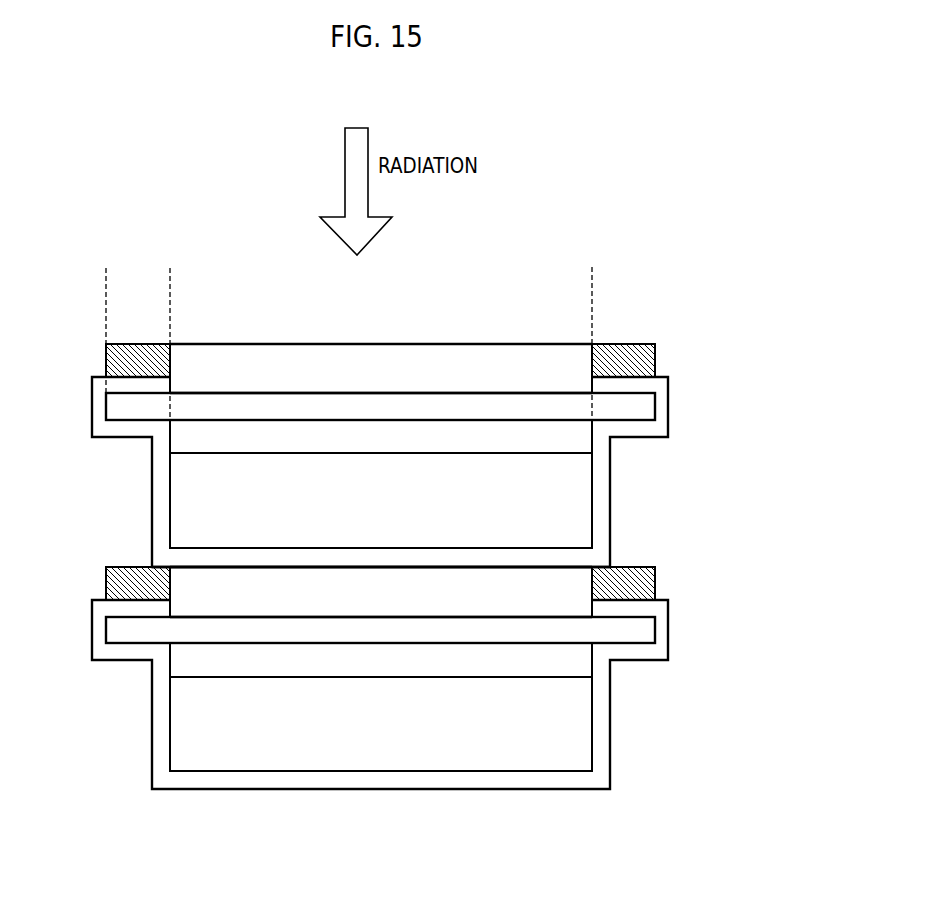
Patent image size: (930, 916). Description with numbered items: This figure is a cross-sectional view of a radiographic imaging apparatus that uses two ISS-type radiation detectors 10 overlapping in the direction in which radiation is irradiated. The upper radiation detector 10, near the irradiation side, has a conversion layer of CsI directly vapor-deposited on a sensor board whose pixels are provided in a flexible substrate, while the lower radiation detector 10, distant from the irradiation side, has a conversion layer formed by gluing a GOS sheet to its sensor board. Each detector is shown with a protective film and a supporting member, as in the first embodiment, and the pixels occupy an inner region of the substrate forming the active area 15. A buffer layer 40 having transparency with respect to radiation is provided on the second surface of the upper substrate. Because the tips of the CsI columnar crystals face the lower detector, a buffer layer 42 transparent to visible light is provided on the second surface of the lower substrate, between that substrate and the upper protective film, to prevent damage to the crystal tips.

The radiation detector 10 is at (745, 856).
The active area 15 is at (592, 318).
The buffer layer 40 is at (553, 352).
The buffer layer 42 is at (570, 574).